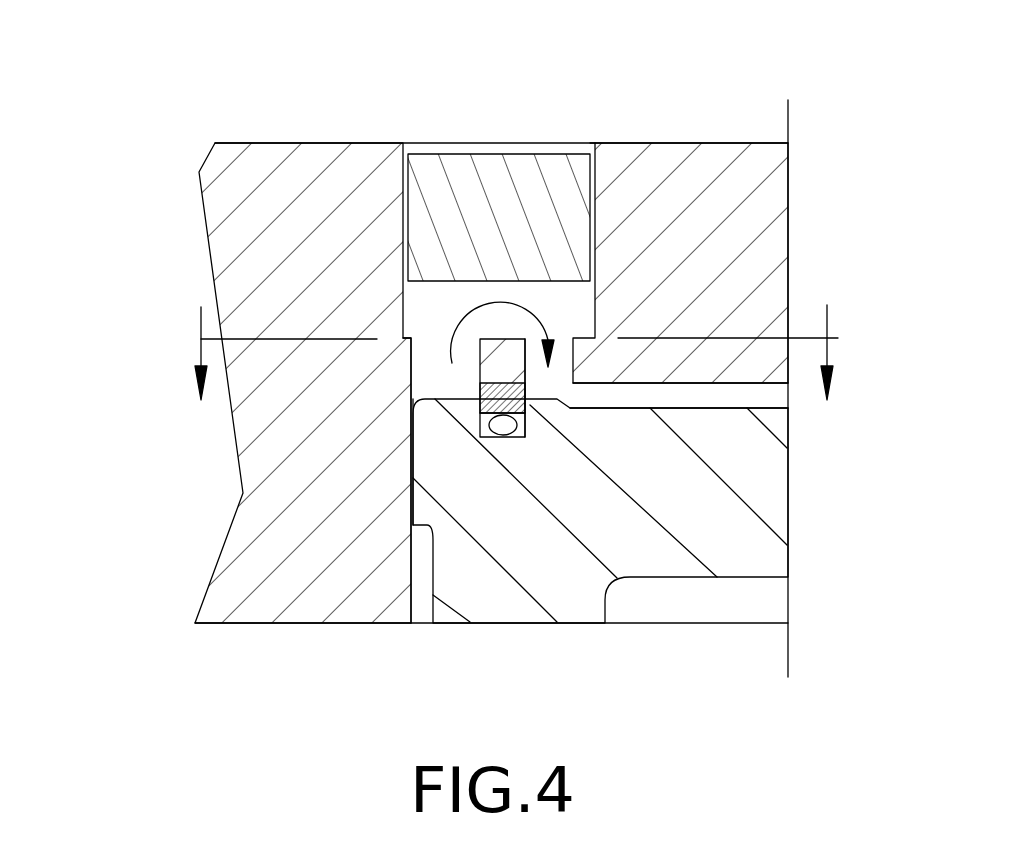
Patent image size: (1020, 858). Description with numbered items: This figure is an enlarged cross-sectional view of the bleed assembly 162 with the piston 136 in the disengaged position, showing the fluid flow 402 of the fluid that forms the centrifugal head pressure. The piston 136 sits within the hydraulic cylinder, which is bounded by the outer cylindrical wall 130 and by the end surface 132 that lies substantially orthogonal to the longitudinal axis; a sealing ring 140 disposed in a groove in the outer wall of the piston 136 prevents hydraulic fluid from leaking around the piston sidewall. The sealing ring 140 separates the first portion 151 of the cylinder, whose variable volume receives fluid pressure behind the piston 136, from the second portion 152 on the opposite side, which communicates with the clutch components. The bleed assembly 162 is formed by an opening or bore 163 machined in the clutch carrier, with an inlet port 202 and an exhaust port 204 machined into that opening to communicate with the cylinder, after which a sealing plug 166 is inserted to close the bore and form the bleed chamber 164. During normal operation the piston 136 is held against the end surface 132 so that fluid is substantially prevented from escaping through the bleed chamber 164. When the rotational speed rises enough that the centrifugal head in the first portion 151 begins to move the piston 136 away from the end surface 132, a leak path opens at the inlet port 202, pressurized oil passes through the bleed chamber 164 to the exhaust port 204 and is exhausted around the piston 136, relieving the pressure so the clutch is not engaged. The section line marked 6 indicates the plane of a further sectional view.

The fluid flow 402 is at (457, 322).
The sealing plug 166 is at (428, 163).
The bleed assembly 162 is at (464, 97).
The opening or bore 163 is at (564, 143).
The bleed chamber 164 is at (568, 307).
The section line 6 is at (515, 352).
The inlet port 202 is at (430, 348).
The first portion of cylinder 151 is at (418, 398).
The second portion of cylinder 152 is at (775, 395).
The piston 136 is at (778, 473).
The outer cylindrical wall 130 is at (683, 383).
The end surface 132 is at (412, 503).
The sealing ring 140 is at (528, 401).
The exhaust port 204 is at (562, 367).